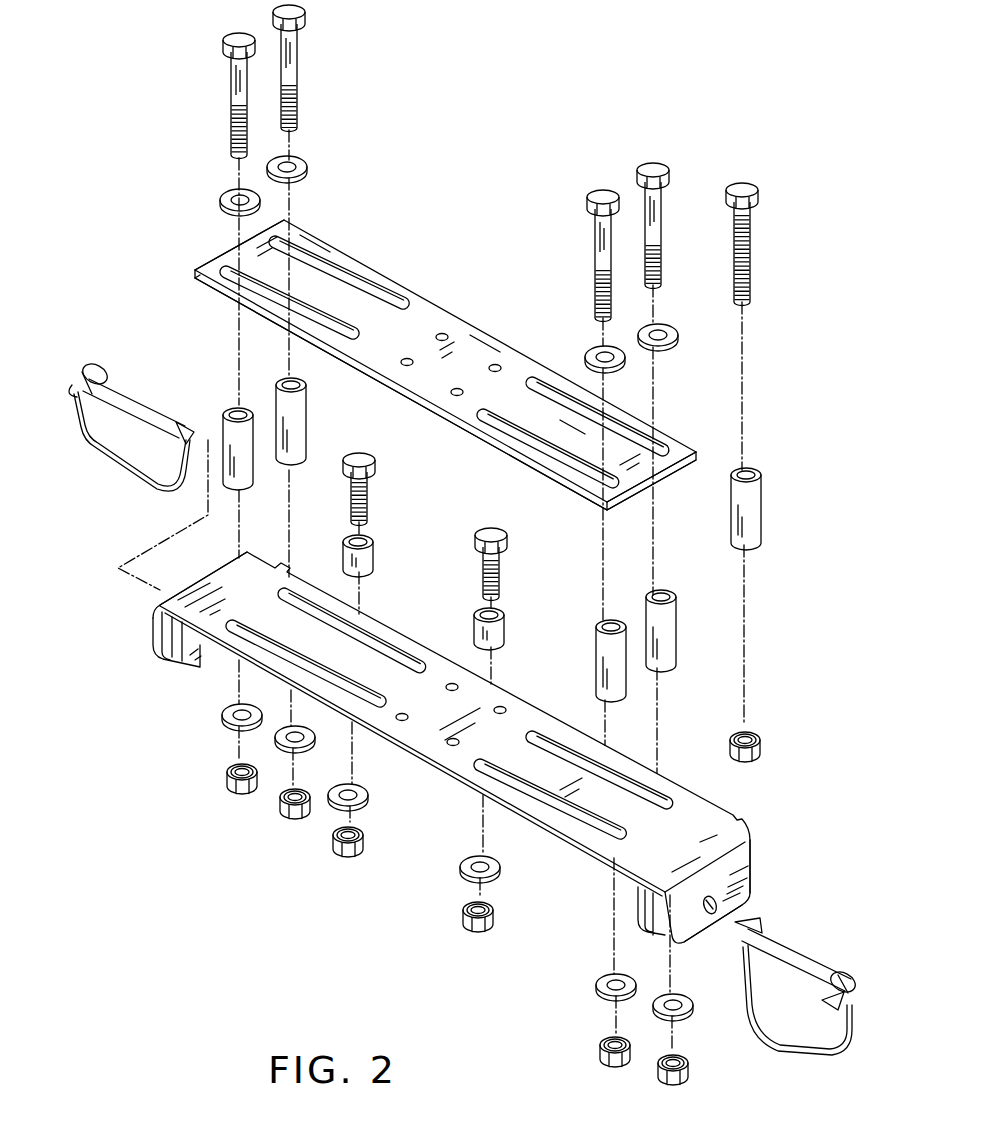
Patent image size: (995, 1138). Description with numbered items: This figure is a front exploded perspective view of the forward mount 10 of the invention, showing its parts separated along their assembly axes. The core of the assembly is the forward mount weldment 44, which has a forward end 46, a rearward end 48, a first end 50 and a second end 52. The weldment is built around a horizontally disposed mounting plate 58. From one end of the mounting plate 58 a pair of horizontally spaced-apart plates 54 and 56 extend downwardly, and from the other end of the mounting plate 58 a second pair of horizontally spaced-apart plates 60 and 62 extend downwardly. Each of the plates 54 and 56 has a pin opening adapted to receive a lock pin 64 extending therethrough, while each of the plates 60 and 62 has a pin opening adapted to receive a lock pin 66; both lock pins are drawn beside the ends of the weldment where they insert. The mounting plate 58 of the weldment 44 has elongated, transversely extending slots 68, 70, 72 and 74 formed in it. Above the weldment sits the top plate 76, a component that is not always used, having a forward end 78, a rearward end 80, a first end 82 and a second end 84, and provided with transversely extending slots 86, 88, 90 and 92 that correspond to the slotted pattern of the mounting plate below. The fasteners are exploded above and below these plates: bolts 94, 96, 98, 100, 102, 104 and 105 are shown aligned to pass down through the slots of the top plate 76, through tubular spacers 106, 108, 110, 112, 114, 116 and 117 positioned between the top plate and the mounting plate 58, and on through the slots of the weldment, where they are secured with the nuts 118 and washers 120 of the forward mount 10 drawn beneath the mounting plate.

The forward mount 10 is at (112, 318).
The forward mount weldment 44 is at (752, 804).
The forward end 46 is at (453, 782).
The rearward end 48 is at (510, 690).
The first end 50 is at (148, 607).
The second end 52 is at (767, 897).
The plate 54 is at (148, 635).
The plate 56 is at (185, 643).
The mounting plate 58 is at (444, 714).
The plate 60 is at (750, 867).
The plate 62 is at (640, 918).
The lock pin 64 is at (130, 398).
The lock pin 66 is at (800, 953).
The slot 68 is at (380, 647).
The slot 70 is at (238, 640).
The slot 72 is at (628, 770).
The slot 74 is at (556, 835).
The top plate 76 is at (490, 318).
The forward end 78 is at (478, 445).
The rearward end 80 is at (447, 305).
The first end 82 is at (225, 243).
The second end 84 is at (665, 480).
The slot 86 is at (330, 262).
The slot 88 is at (320, 318).
The slot 90 is at (560, 388).
The slot 92 is at (562, 470).
The bolt 94 is at (292, 60).
The bolt 96 is at (237, 80).
The bolt 98 is at (660, 210).
The bolt 100 is at (600, 240).
The bolt 102 is at (370, 500).
The bolt 104 is at (500, 582).
The bolt 105 is at (752, 245).
The tubular spacer 106 is at (305, 408).
The tubular spacer 108 is at (227, 420).
The tubular spacer 110 is at (673, 638).
The tubular spacer 112 is at (623, 653).
The tubular spacer 114 is at (372, 557).
The tubular spacer 116 is at (500, 632).
The tubular spacer 117 is at (750, 505).
The nut 118 is at (242, 790).
The washer 120 is at (228, 728).